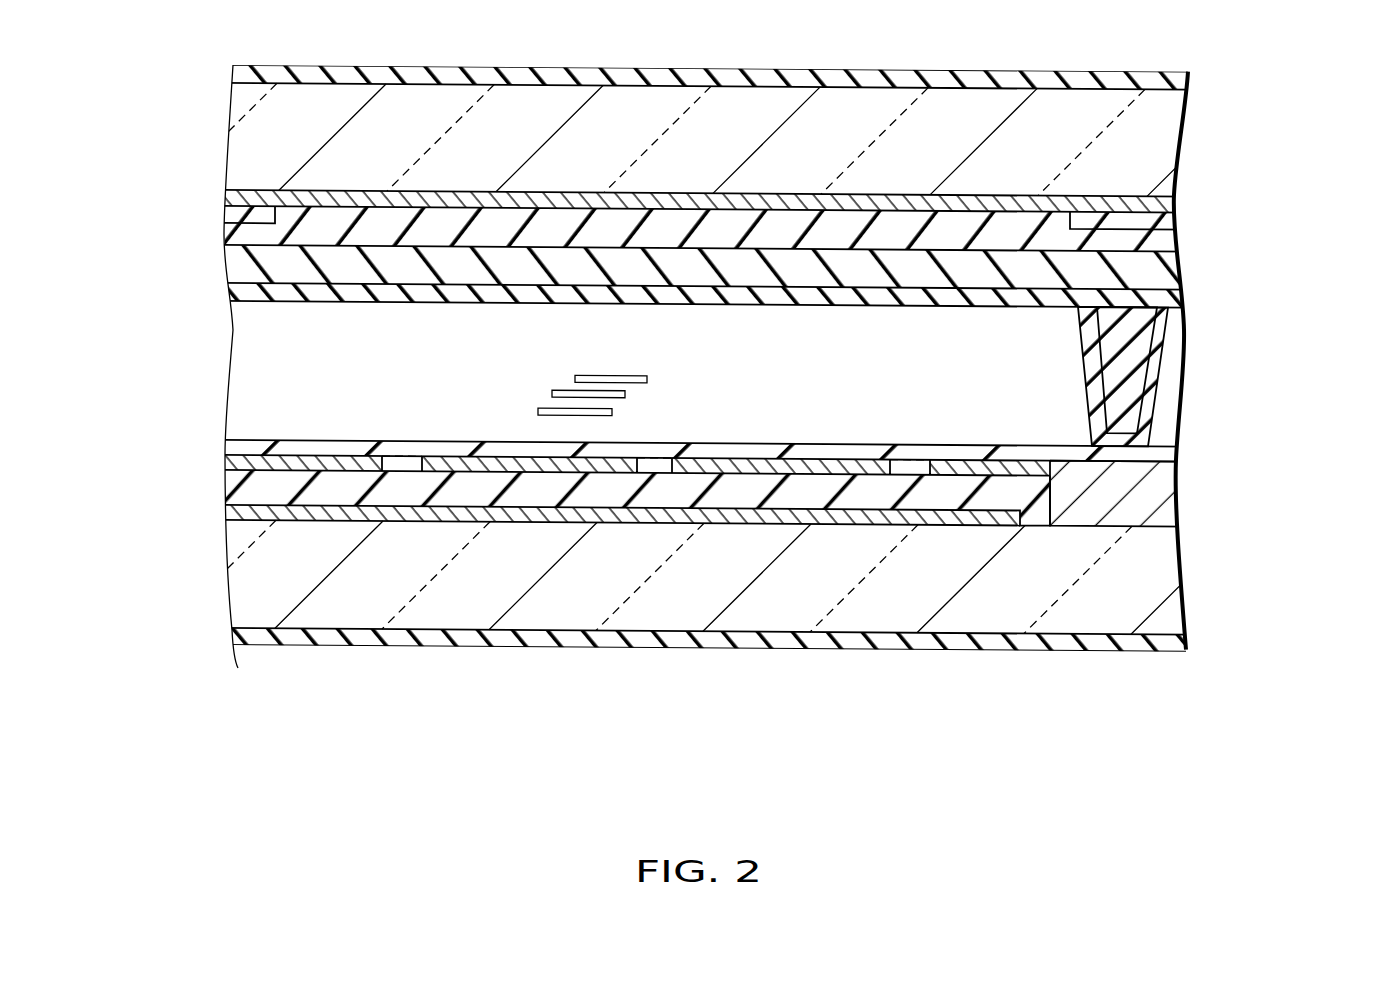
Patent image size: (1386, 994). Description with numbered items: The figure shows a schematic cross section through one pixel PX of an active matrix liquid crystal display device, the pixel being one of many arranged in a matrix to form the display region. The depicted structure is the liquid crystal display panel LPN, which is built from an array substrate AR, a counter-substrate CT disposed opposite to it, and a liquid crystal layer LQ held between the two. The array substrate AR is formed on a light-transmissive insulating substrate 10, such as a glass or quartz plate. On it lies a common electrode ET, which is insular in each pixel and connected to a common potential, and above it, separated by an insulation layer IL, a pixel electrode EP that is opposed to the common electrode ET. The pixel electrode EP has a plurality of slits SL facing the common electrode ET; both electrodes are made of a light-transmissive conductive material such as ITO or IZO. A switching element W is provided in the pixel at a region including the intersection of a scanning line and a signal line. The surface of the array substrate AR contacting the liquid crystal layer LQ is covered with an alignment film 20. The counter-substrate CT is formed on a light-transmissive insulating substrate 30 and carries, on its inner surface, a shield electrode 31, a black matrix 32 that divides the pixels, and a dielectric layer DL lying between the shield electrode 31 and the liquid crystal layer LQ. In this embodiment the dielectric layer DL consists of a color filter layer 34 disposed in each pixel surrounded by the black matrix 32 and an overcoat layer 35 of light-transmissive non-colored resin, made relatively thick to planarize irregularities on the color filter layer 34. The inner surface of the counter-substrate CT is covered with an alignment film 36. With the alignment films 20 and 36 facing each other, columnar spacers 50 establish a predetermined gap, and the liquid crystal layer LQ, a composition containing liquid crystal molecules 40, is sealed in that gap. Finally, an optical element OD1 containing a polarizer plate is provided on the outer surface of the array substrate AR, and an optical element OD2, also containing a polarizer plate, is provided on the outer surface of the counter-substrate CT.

The optical element OD2 is at (233, 72).
The insulating substrate 30 is at (232, 127).
The shield electrode 31 is at (233, 197).
The black matrix 32 is at (233, 214).
The color filter layer 34 is at (236, 231).
The overcoat layer 35 is at (238, 265).
The alignment film 36 is at (238, 291).
The dielectric layer DL is at (641, 249).
The liquid crystal layer LQ is at (401, 363).
The liquid crystal molecules 40 is at (612, 373).
The alignment film 20 is at (240, 448).
The pixel electrode EP is at (238, 463).
The slits SL is at (412, 440).
The insulation layer IL is at (238, 482).
The common electrode ET is at (238, 512).
The switching element W is at (1068, 470).
The insulating substrate 10 is at (232, 568).
The optical element OD1 is at (1185, 660).
The columnar spacers 50 is at (1119, 340).
The counter-substrate CT is at (675, 168).
The array substrate AR is at (691, 512).
The liquid crystal display panel LPN is at (734, 341).
The pixel PX is at (734, 382).